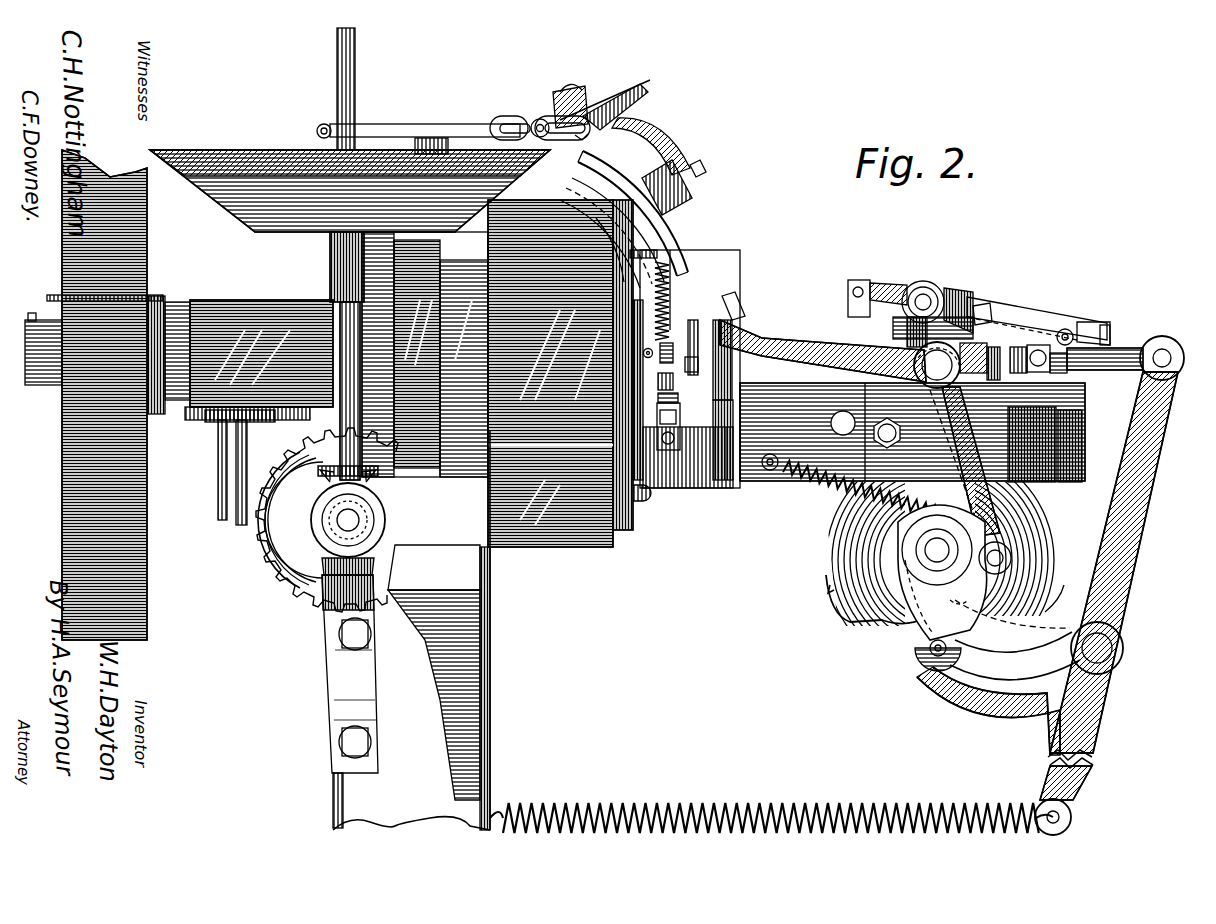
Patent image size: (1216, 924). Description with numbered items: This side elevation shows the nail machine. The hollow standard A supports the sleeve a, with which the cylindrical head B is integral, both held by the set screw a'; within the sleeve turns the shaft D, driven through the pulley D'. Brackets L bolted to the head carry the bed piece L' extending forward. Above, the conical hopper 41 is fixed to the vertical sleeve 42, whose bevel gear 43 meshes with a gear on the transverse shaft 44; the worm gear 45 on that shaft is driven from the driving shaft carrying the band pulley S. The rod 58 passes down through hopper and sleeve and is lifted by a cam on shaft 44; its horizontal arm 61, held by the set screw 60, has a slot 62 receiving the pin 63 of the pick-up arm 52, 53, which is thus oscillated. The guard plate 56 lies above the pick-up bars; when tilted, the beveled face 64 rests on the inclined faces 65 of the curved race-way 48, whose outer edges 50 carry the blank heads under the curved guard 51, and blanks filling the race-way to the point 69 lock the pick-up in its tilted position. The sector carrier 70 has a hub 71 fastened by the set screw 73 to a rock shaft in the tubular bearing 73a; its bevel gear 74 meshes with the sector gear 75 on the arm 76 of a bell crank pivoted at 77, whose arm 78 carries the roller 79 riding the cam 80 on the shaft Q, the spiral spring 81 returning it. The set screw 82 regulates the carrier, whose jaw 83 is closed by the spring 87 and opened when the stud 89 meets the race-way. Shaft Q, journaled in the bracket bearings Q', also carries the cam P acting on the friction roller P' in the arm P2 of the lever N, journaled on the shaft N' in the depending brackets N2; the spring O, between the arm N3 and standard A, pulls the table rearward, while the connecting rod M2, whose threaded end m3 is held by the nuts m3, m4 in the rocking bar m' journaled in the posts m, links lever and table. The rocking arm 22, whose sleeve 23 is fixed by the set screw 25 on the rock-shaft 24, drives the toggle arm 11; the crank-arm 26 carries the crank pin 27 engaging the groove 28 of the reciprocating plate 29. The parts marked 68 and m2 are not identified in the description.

The pulley D' is at (117, 395).
The shaft D is at (107, 349).
The sleeve a is at (259, 353).
The band pulley S is at (236, 467).
The vertically movable rod 58 is at (358, 89).
The hopper 41 is at (350, 191).
The set screw 60 is at (315, 122).
The horizontal arm 61 is at (423, 124).
The pick-up arm 52 is at (462, 140).
The elongated slot 62 is at (504, 118).
The pin 63 is at (545, 136).
The pick-up arm 53 is at (588, 118).
The guard plate 56 is at (553, 100).
The beveled face 64 is at (605, 105).
The inclined faces 65 is at (588, 136).
The curved arm 68 is at (640, 124).
The point 69 is at (665, 168).
The curved guard 51 is at (686, 262).
The outer edges 50 is at (676, 240).
The curved race-way 48 is at (612, 238).
The cylindrical head B is at (552, 547).
The brackets L is at (642, 509).
The set screw a' is at (425, 354).
The vertically arranged sleeve 42 is at (332, 262).
The worm gear 45 is at (288, 562).
The bevel gear 43 is at (378, 510).
The transverse shaft 44 is at (358, 522).
The hollow standard A is at (406, 630).
The spiral spring O is at (871, 803).
The bed piece or frame L' is at (686, 377).
The sector shaped carrier 70 is at (647, 259).
The spiral spring 87 is at (651, 301).
The stud 89 is at (644, 347).
The jaw 83 is at (660, 363).
The set screw 82 is at (658, 384).
The hub 71 is at (712, 380).
The set screw 73 is at (692, 356).
The bevel gear 74 is at (714, 400).
The sector gear 75 is at (738, 302).
The arm 76 is at (803, 342).
The tubular bearing 73a is at (760, 360).
The depending bracket bearings Q' is at (895, 431).
The spiral spring 81 is at (815, 488).
The rocking arm 22 is at (885, 290).
The arm 11 is at (905, 330).
The sleeve 23 is at (936, 284).
The rock-shaft 24 is at (922, 294).
The set screw 25 is at (985, 306).
The crank-arm 26 is at (1010, 312).
The crank pin 27 is at (1072, 333).
The vertically reciprocating frame or plate 29 is at (1107, 323).
The groove 28 is at (1110, 340).
The screw threaded end m3 is at (1023, 347).
The posts m is at (1053, 335).
The nut m2 is at (1070, 370).
The rocking bar m' is at (1036, 371).
The nut m4 is at (1063, 384).
The pivot 77 is at (937, 365).
The arm 78 is at (965, 466).
The cam P is at (945, 560).
The driven shaft Q is at (937, 550).
The anti-friction roller 79 is at (1012, 552).
The cam 80 is at (959, 595).
The friction roller P' is at (924, 652).
The depending brackets N2 is at (1015, 640).
The shaft N' is at (1110, 648).
The arm P2 is at (984, 705).
The lever N is at (1114, 562).
The arm N3 is at (1093, 758).
The connecting rod M2 is at (1150, 340).